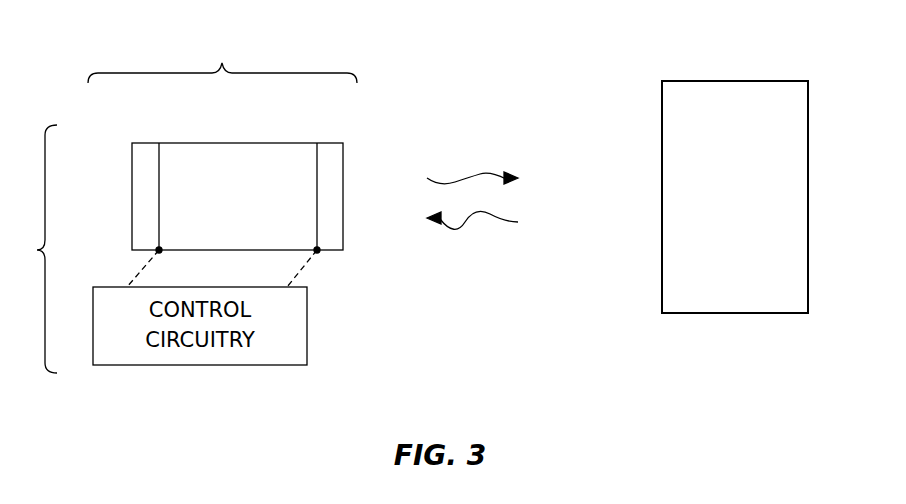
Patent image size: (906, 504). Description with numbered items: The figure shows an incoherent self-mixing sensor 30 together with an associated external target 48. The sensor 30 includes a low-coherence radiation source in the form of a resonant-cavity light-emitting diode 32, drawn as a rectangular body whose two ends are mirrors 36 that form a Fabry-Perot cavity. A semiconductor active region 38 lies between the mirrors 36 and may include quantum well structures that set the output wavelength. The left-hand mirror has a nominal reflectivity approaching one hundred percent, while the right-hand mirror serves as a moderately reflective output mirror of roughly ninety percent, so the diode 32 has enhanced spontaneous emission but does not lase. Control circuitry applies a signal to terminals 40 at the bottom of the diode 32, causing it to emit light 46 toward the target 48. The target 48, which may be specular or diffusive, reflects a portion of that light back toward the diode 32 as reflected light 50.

The self-mixing sensor 30 is at (33, 249).
The resonant-cavity light-emitting diode 32 is at (222, 63).
The mirrors 36 is at (148, 152).
The semiconductor active region 38 is at (242, 152).
The terminals 40 is at (161, 252).
The emitted light 46 is at (470, 177).
The target 48 is at (735, 80).
The reflected light 50 is at (470, 225).